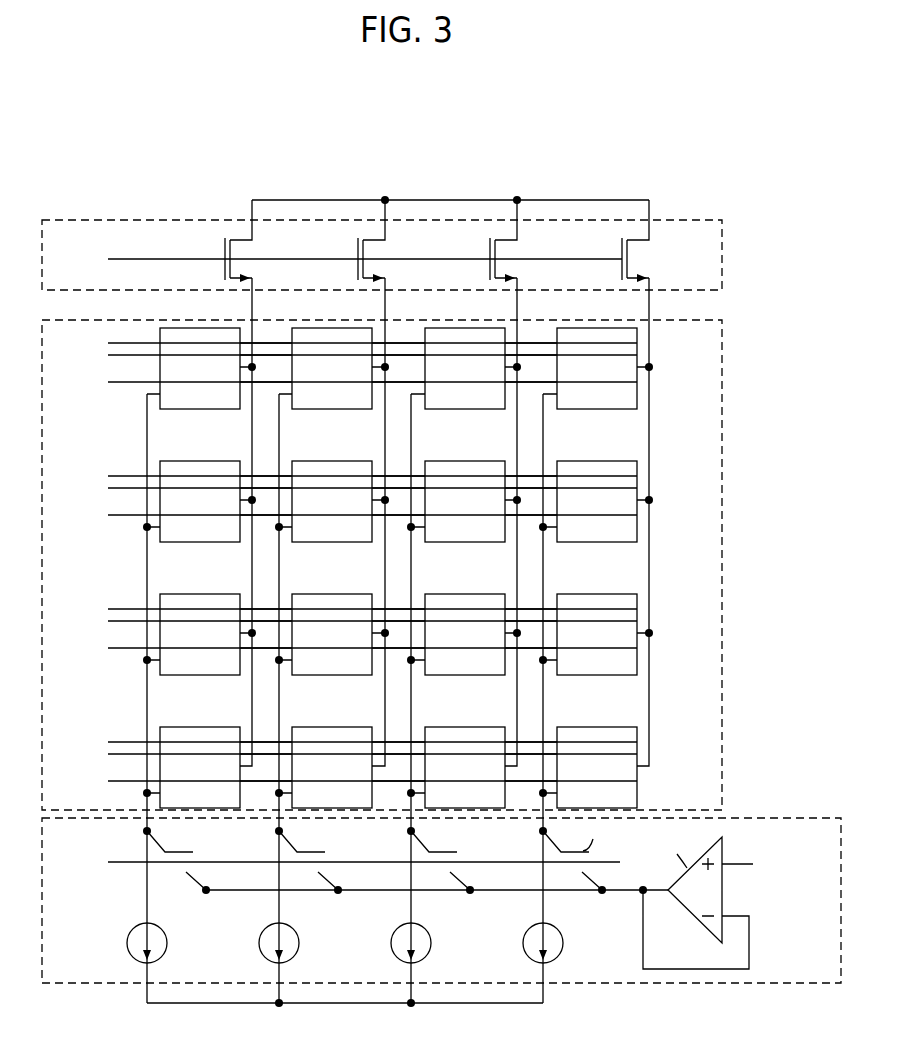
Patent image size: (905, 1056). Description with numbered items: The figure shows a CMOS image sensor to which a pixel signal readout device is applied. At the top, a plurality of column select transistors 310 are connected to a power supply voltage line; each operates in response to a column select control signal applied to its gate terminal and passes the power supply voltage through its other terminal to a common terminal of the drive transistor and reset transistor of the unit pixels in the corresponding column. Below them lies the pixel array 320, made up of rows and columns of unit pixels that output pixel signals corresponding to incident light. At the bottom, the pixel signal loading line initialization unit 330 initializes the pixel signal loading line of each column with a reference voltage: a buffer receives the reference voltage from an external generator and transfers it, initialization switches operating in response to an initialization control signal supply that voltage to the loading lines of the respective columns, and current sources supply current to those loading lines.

The column select transistors 310 is at (680, 220).
The pixel array 320 is at (680, 320).
The pixel signal loading line initialization unit 330 is at (797, 818).